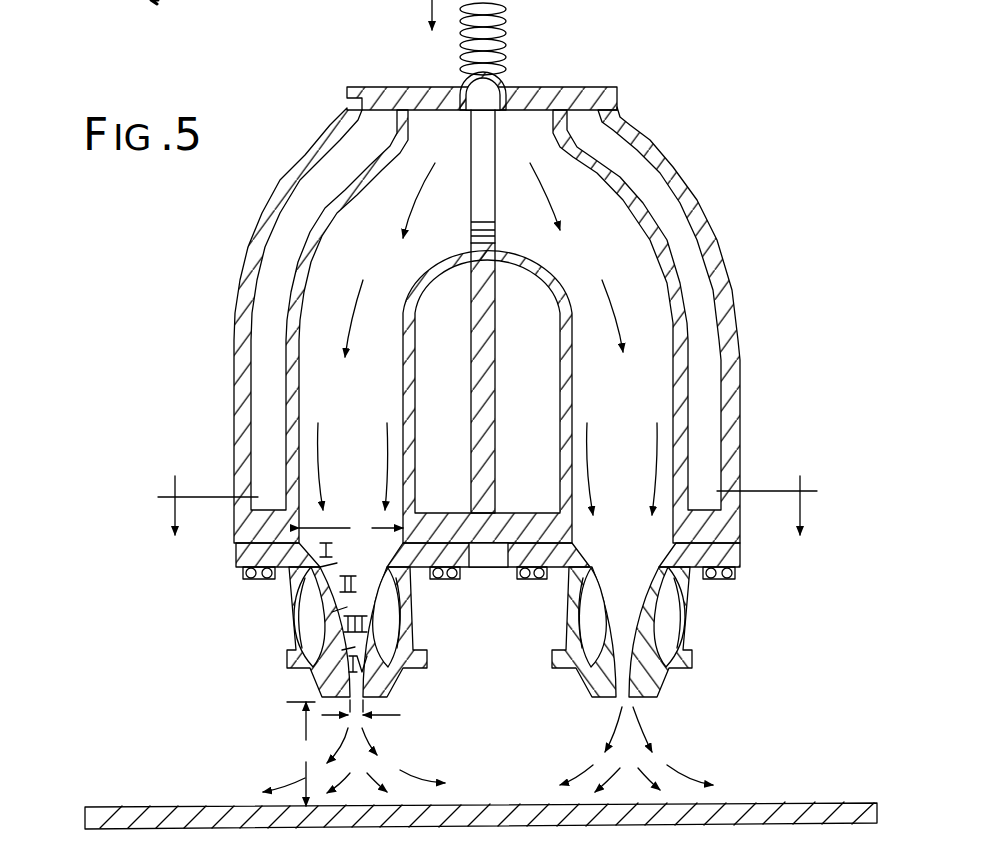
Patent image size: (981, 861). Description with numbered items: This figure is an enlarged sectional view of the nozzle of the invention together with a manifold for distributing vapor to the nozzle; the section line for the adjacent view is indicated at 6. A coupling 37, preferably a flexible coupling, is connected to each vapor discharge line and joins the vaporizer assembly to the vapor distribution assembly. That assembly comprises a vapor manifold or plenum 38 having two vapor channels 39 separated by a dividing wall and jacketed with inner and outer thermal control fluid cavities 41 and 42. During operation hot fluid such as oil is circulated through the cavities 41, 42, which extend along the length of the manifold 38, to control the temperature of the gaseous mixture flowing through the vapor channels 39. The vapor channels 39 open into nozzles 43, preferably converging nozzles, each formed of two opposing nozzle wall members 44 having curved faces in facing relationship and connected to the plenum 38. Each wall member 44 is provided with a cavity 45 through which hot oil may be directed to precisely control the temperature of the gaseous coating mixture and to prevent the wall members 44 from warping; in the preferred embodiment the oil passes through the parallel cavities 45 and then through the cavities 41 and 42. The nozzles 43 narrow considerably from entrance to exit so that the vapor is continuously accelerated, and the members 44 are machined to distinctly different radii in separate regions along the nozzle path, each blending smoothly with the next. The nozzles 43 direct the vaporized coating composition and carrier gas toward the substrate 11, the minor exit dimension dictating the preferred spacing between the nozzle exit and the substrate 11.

The section line 6- 6 is at (487, 490).
The substrate 11 is at (766, 803).
The coupling 37 is at (504, 38).
The vapor manifold 38 is at (650, 133).
The vapor channels 39 is at (357, 269).
The inner thermal control fluid cavity 41 is at (430, 497).
The outer thermal control fluid cavity 42 is at (260, 461).
The nozzles 43 is at (362, 571).
The nozzle wall members 44 is at (290, 622).
The cavity 45 is at (310, 598).